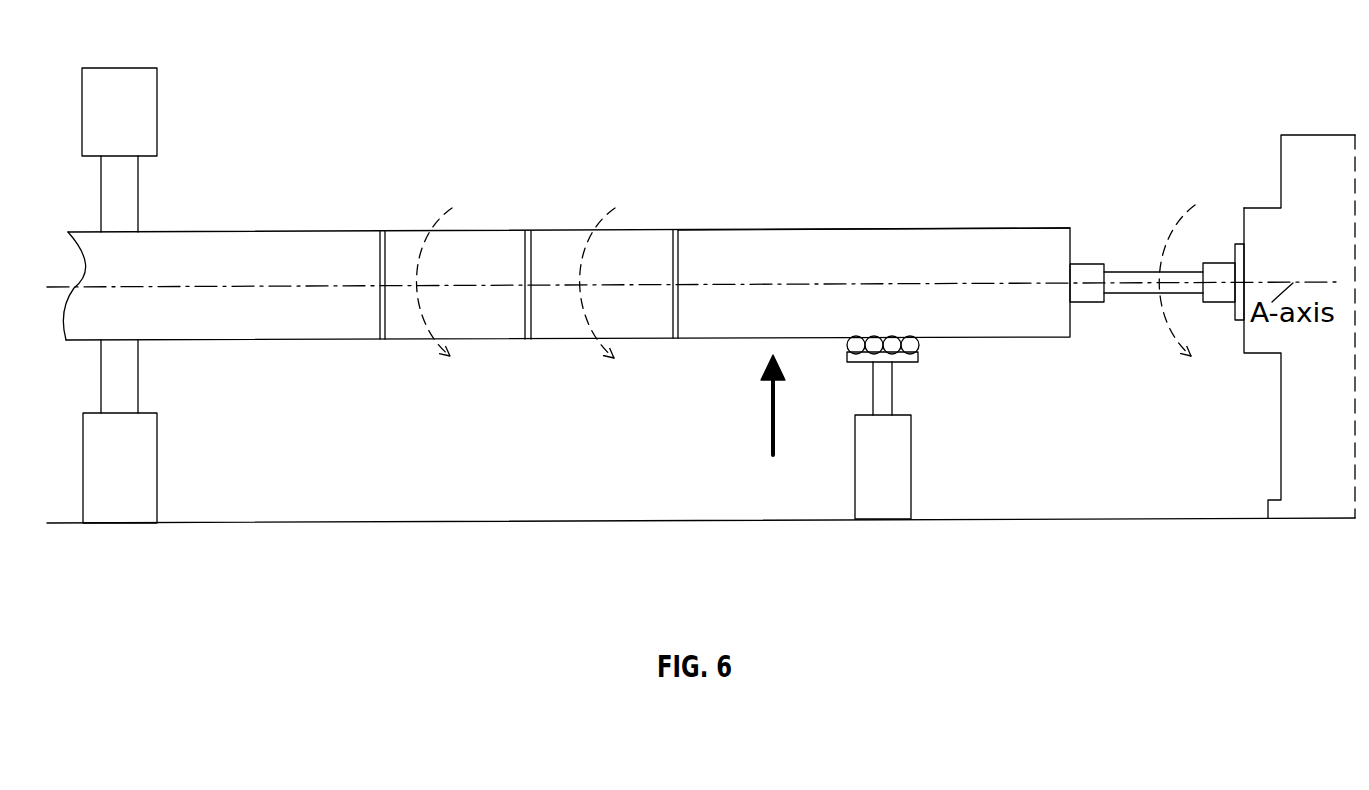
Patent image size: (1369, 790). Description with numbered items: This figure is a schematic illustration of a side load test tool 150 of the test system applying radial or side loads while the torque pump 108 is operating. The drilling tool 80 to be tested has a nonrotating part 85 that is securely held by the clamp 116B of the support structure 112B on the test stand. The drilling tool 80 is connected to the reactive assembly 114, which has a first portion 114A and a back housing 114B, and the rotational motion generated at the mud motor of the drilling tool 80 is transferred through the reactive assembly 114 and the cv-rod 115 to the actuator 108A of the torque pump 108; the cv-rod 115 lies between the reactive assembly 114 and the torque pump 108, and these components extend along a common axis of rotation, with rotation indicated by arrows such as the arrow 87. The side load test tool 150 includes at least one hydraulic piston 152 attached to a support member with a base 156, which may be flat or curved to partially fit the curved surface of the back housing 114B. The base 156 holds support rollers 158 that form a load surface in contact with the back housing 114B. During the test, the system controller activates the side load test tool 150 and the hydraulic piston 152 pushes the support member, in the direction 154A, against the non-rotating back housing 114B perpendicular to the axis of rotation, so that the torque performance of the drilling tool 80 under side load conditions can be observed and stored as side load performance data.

The drilling tool 80 is at (365, 190).
The nonrotating part 85 is at (210, 342).
The first rotation 87 is at (475, 228).
The torque pump 108 is at (1335, 481).
The actuator 108A is at (1232, 243).
The support structure 112B is at (157, 462).
The reactive assembly 114 is at (787, 158).
The first workpiece portion 114A is at (635, 228).
The back housing 114B is at (928, 227).
The cv-rod 115 is at (1140, 294).
The clamp 116B is at (138, 205).
The side load test tool 150 is at (934, 427).
The hydraulic piston 152 is at (911, 470).
The lifting direction 154A is at (840, 348).
The base 156 is at (900, 363).
The support rollers 158 is at (922, 343).